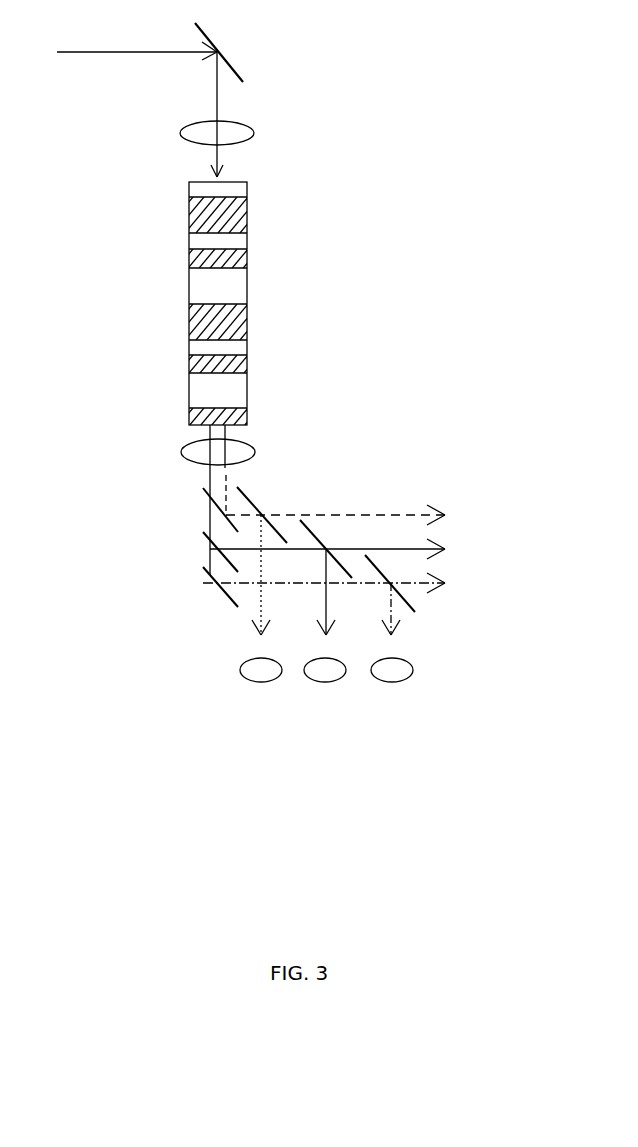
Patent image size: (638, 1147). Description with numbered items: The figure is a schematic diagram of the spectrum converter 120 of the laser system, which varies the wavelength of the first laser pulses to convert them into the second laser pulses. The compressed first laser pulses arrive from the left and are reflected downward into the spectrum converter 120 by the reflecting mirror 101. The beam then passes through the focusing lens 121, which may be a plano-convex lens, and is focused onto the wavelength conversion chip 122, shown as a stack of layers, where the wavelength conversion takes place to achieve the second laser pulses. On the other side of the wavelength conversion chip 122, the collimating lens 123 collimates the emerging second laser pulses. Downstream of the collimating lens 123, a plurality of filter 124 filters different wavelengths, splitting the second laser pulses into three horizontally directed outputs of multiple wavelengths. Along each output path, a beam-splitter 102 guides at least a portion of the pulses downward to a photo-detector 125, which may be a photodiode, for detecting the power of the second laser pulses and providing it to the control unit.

The reflecting mirror 101 is at (226, 61).
The spectrum converter 120 is at (439, 144).
The focusing lens 121 is at (254, 131).
The wavelength conversion chip 122 is at (247, 285).
The collimating lens 123 is at (255, 452).
The filter 124 is at (210, 575).
The beam-splitter 102 is at (412, 602).
The photo-detector 125 is at (392, 682).